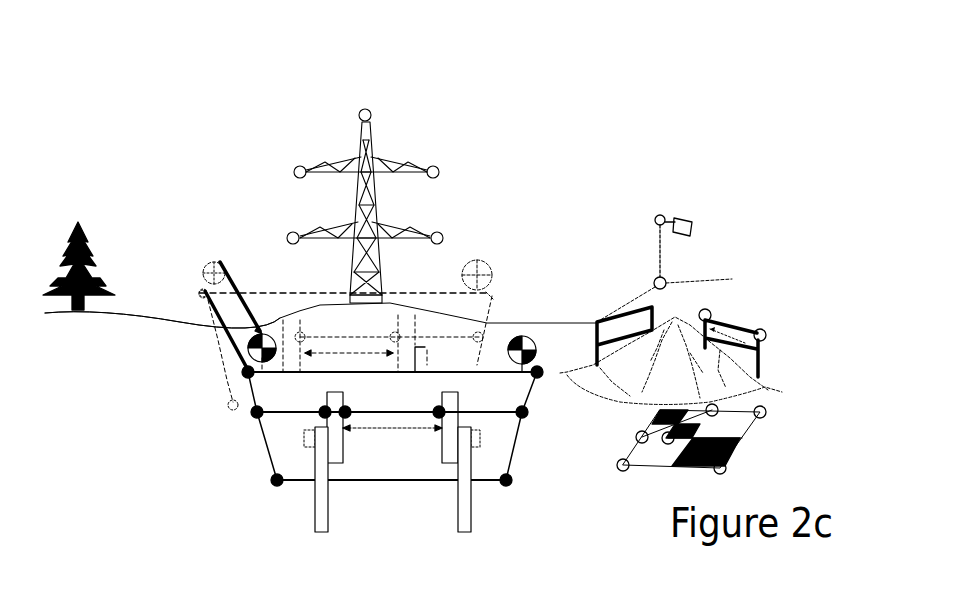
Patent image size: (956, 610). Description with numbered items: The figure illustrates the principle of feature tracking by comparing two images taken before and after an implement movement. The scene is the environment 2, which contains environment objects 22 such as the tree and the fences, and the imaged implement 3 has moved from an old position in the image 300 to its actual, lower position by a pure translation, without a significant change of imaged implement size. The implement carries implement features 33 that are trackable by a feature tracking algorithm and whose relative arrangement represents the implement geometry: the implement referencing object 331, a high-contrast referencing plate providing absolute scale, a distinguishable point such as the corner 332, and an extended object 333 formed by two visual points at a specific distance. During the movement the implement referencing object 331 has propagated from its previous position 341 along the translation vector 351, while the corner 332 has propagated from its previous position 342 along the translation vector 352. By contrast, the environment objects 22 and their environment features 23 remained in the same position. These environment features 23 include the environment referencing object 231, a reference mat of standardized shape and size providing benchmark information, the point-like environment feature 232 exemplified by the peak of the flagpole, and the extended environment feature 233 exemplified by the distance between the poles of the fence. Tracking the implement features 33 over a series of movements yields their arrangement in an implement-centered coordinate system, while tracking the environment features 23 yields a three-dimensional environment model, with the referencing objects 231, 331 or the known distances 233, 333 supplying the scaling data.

The environment 2 is at (80, 121).
The environment objects 22 is at (78, 223).
The implement 3 is at (488, 367).
The old position in the image 300 is at (290, 293).
The previous position of implement referencing object 341 is at (207, 276).
The previous position of corner 342 is at (200, 294).
The translation vector 351 is at (236, 290).
The translation vector 352 is at (209, 297).
The implement features 33 is at (67, 437).
The implement referencing object 331 is at (243, 355).
The distinguishable point 332 is at (245, 376).
The extended object 333 is at (392, 428).
The environment features 23 is at (833, 388).
The environment referencing object 231 is at (742, 433).
The point-like environment feature 232 is at (763, 415).
The extended environment feature 233 is at (663, 226).